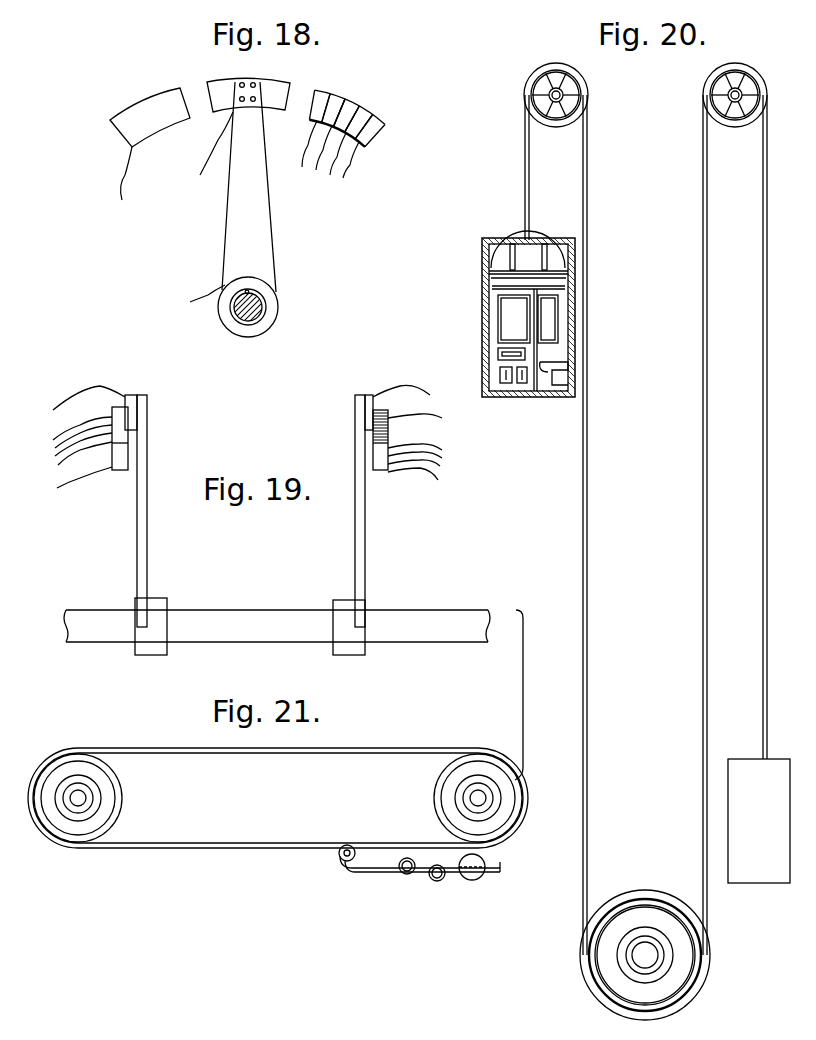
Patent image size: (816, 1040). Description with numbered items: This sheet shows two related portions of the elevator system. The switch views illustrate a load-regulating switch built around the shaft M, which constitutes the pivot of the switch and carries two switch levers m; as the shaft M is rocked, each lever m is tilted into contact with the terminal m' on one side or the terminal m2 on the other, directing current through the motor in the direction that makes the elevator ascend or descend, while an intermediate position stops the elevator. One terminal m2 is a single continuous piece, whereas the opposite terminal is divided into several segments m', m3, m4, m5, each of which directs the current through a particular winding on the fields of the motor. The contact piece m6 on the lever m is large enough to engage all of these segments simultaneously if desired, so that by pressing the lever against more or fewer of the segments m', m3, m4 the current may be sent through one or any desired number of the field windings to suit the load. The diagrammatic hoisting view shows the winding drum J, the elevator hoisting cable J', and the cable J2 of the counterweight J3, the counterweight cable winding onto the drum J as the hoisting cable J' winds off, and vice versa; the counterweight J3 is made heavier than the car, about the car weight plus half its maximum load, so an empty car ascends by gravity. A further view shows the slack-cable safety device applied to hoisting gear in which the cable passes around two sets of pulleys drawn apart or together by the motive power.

In FIG. 18, the switch lever m is at (234, 209).
In FIG. 19, the switch lever m is at (283, 506).
In FIG. 18, the terminal m2 is at (150, 144).
In FIG. 19, the terminal m2 is at (112, 455).
In FIG. 18, the contact piece m6 is at (274, 86).
In FIG. 18, the terminal m' is at (343, 117).
In FIG. 18, the terminal segment m3 is at (348, 108).
In FIG. 18, the terminal segment m4 is at (357, 116).
In FIG. 18, the terminal segment m5 is at (377, 123).
In FIG. 18, the shaft M is at (262, 310).
In FIG. 19, the shaft M is at (277, 626).
In FIG. 20, the winding drum J is at (645, 955).
In FIG. 20, the elevator hoisting cable J' is at (542, 526).
In FIG. 20, the counterweight cable J2 is at (645, 509).
In FIG. 20, the counterweight J3 is at (759, 821).